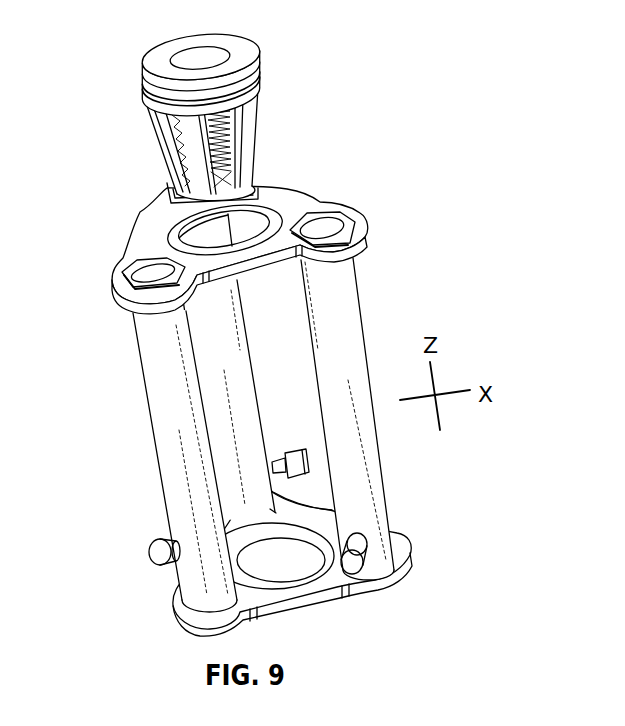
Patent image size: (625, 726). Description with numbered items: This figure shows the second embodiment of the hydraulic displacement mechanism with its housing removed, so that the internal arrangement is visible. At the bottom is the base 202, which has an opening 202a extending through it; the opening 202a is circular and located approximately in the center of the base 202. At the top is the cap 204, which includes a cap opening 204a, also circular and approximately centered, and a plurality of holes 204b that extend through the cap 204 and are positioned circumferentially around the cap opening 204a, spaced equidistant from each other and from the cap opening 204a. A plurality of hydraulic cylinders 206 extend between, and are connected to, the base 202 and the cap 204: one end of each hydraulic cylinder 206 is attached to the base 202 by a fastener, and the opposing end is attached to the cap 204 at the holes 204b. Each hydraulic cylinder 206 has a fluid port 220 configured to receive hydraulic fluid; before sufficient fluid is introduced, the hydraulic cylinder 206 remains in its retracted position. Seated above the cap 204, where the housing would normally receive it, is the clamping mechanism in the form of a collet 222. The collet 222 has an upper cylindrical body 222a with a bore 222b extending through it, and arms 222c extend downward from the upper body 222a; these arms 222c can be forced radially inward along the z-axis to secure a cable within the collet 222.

The base 202 is at (316, 616).
The opening 202a is at (259, 572).
The cap 204 is at (301, 193).
The cap opening 204a is at (268, 223).
The holes 204b is at (333, 225).
The hydraulic cylinders 206 is at (154, 440).
The fluid port 220 is at (149, 552).
The collet 222 is at (201, 101).
The upper cylindrical body 222a is at (143, 88).
The bore 222b is at (191, 62).
The arms 222c is at (162, 143).